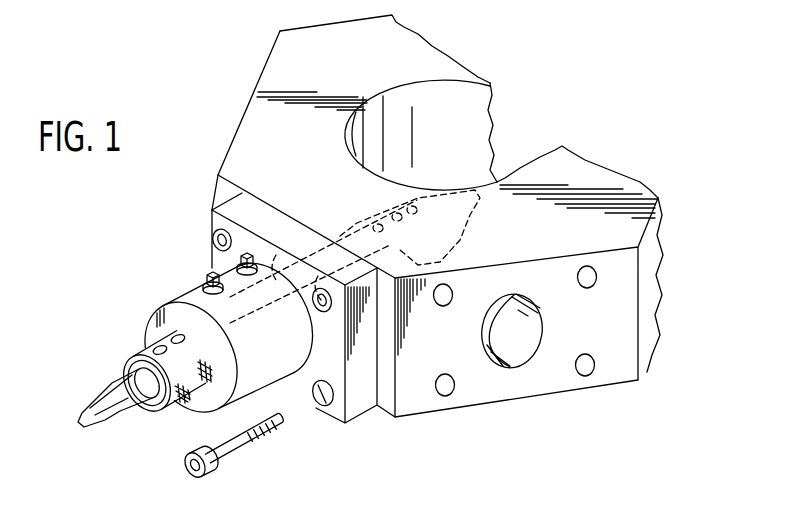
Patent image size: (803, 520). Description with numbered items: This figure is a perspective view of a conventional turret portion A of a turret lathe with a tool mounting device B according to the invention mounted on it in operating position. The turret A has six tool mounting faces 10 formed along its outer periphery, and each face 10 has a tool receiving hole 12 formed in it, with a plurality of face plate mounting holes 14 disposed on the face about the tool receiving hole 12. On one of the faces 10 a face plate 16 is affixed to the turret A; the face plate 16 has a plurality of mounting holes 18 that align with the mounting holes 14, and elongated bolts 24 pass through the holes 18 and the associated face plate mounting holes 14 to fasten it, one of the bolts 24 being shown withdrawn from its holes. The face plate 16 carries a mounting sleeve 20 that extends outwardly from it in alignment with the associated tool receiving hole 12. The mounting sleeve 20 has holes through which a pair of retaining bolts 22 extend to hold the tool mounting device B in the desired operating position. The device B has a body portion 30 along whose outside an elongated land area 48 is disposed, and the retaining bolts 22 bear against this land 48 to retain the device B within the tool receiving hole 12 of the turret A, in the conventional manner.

The tool mounting faces 10 is at (387, 405).
The tool receiving hole 12 is at (516, 368).
The face plate mounting holes 14 is at (443, 304).
The face plate 16 is at (300, 386).
The mounting holes 18 is at (214, 238).
The mounting sleeve 20 is at (201, 405).
The retaining bolts 22 is at (203, 284).
The elongated bolts 24 is at (223, 455).
The body portion 30 is at (140, 345).
The elongated land area 48 is at (256, 308).
The turret portion A is at (241, 113).
The tool mounting device B is at (168, 418).